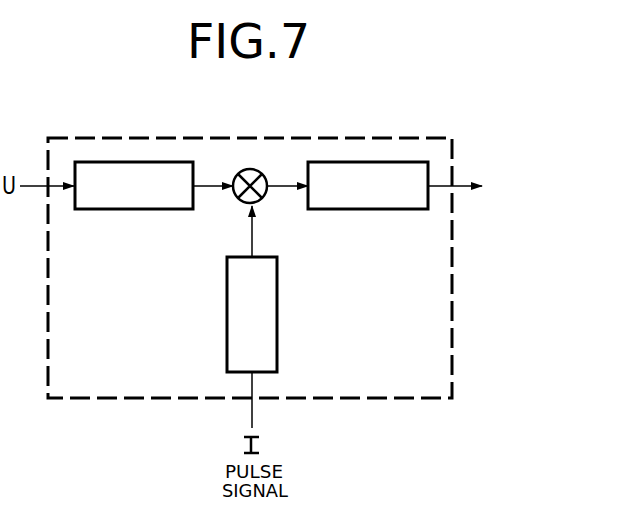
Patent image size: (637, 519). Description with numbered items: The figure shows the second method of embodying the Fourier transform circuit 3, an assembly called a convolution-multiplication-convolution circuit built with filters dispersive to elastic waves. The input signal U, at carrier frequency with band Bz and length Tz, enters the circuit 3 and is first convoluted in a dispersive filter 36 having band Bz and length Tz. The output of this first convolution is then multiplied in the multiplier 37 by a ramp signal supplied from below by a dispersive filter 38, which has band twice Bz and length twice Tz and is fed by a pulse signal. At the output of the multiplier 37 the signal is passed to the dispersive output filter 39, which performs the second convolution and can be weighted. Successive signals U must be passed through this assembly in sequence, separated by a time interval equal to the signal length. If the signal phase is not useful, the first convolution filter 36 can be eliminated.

The Fourier transform circuit 3 is at (120, 138).
The dispersive filter 36 is at (75, 209).
The multiplier 37 is at (245, 170).
The dispersive filter 38 is at (277, 285).
The dispersive output filter 39 is at (310, 209).